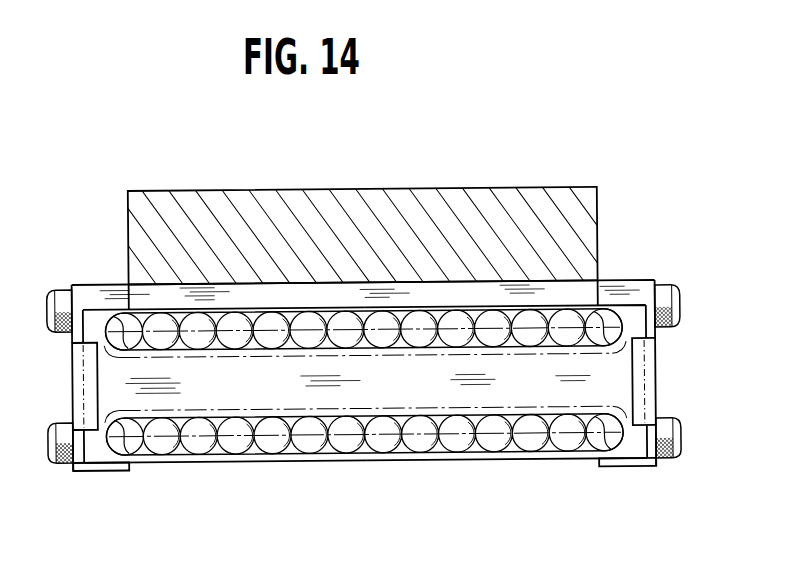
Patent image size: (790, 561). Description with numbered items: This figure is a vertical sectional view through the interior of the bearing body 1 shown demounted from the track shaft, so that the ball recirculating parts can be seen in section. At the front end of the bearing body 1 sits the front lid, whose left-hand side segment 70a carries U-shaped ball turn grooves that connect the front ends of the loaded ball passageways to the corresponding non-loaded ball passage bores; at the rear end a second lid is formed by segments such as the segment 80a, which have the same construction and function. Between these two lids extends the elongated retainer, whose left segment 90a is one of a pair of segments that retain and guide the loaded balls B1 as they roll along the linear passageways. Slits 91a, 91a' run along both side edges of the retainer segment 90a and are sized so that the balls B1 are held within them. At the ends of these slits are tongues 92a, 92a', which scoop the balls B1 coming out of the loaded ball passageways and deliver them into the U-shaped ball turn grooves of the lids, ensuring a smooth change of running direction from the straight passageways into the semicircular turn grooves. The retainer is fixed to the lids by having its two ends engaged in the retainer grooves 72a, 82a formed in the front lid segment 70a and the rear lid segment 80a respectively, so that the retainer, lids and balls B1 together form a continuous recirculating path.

The bearing body 1 is at (459, 185).
The left-hand side segment 70a is at (89, 298).
The segment 80a is at (621, 294).
The retainer groove 72a is at (82, 383).
The retainer groove 82a is at (652, 384).
The left segment 90a is at (93, 330).
The slit 91a is at (365, 256).
The slit 91a' is at (366, 460).
The tongue 92a is at (156, 257).
The tongue 92a' is at (374, 330).
The loaded balls B1 is at (440, 493).